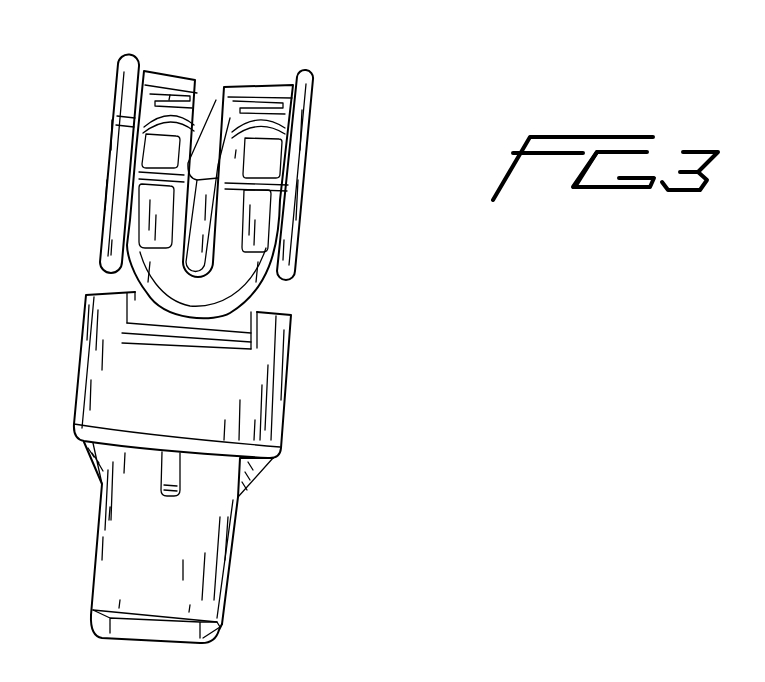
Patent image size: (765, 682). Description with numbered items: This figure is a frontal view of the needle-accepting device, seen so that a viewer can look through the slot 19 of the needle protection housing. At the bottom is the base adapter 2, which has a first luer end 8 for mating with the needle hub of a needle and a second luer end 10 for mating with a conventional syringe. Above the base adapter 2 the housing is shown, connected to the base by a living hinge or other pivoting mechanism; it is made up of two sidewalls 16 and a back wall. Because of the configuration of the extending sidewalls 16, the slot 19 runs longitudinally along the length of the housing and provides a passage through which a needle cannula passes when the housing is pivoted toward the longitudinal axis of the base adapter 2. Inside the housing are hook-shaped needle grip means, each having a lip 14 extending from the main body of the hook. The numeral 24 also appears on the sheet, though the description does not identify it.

The connector housing body 2 is at (233, 543).
The base shoulder block 8 is at (294, 338).
The bottom end of housing 10 is at (226, 627).
The contact spring 14 is at (207, 143).
The side arms 16 is at (110, 148).
The receptacle terminal 19 is at (208, 63).
The wire 24 is at (744, 681).